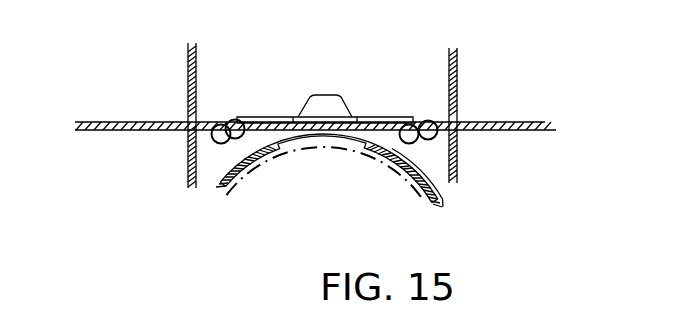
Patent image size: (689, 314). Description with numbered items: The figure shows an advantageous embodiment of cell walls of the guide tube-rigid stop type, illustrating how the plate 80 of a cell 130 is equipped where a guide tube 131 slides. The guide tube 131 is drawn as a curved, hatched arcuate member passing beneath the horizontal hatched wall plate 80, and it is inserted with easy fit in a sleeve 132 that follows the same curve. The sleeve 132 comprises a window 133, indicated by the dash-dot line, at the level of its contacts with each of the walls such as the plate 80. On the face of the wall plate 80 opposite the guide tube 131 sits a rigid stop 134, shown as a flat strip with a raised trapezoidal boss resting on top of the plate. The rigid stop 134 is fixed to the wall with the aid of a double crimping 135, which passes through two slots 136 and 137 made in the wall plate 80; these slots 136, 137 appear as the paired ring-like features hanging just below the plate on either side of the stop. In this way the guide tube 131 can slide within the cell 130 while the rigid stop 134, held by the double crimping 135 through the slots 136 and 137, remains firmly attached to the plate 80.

The plate 80 is at (138, 126).
The cell 130 is at (365, 191).
The guide tube 131 is at (243, 173).
The sleeve 132 is at (403, 160).
The window 133 is at (360, 145).
The rigid stop 134 is at (322, 94).
The double crimping 135 is at (458, 142).
The slot 136 is at (416, 121).
The slot 137 is at (233, 124).